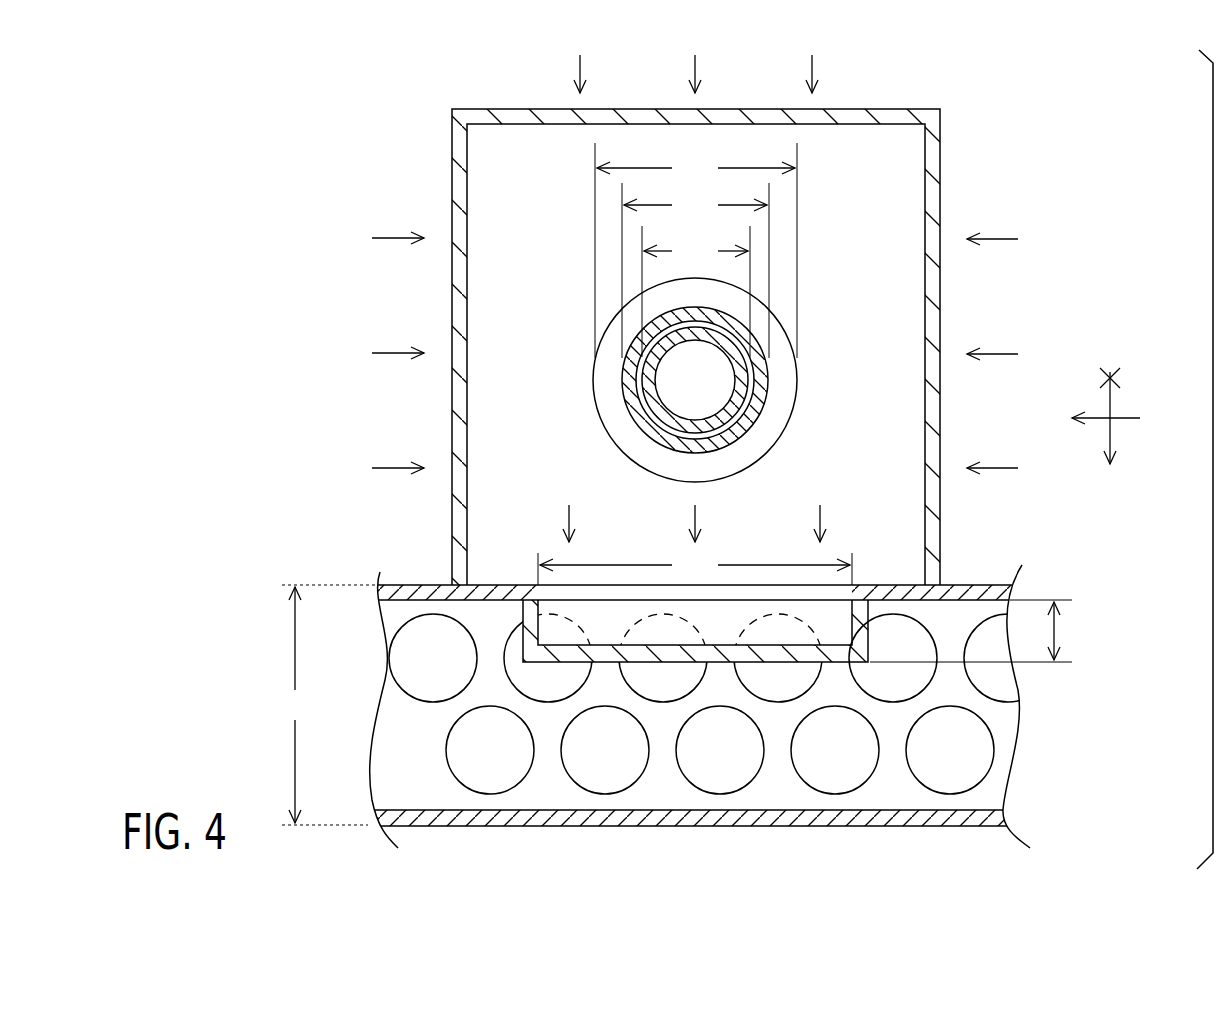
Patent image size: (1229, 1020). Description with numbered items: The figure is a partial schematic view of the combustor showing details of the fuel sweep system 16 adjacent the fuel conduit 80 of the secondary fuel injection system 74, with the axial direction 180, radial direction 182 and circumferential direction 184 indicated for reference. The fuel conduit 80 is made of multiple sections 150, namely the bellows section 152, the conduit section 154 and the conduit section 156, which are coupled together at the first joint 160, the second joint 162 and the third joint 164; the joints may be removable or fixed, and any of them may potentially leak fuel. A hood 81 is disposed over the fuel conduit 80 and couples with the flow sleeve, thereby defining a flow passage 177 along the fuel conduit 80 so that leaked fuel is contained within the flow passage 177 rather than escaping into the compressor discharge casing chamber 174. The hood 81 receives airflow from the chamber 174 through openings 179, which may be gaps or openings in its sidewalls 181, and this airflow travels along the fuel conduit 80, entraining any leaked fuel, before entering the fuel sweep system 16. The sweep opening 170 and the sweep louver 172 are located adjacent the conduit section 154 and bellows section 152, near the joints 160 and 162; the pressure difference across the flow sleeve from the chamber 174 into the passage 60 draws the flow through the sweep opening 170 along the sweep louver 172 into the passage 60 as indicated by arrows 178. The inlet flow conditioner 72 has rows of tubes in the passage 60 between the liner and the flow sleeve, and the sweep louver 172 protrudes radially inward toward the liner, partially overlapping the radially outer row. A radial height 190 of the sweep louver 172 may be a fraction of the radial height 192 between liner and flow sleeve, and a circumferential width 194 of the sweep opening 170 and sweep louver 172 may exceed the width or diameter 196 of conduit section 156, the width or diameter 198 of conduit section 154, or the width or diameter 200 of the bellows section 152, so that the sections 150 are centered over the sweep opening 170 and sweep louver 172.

The fuel sweep system 16 is at (649, 520).
The passage 60 is at (996, 780).
The inlet flow conditioner 72 is at (1036, 740).
The secondary fuel injection system 74 is at (1060, 286).
The fuel conduit 80 is at (828, 328).
The hood 81 is at (940, 112).
The sections 150 is at (806, 446).
The bellows section 152 is at (733, 410).
The conduit section 154 is at (762, 376).
The conduit section 156 is at (751, 395).
The first joint 160 is at (628, 392).
The second joint 162 is at (643, 396).
The third joint 164 is at (661, 420).
The sweep opening 170 is at (613, 597).
The sweep louver 172 is at (523, 647).
The compressor discharge casing chamber 174 is at (303, 444).
The flow passage 177 is at (509, 231).
The arrows 178 is at (569, 518).
The openings 179 is at (706, 104).
The axial direction 180 is at (1112, 375).
The sidewalls 181 is at (886, 109).
The radial direction 182 is at (1110, 432).
The circumferential direction 184 is at (1125, 418).
The radial height 190 is at (1057, 630).
The radial height 192 is at (326, 705).
The circumferential width 194 is at (695, 568).
The width or diameter 196 is at (696, 291).
The width or diameter 198 is at (695, 270).
The width or diameter 200 is at (696, 250).